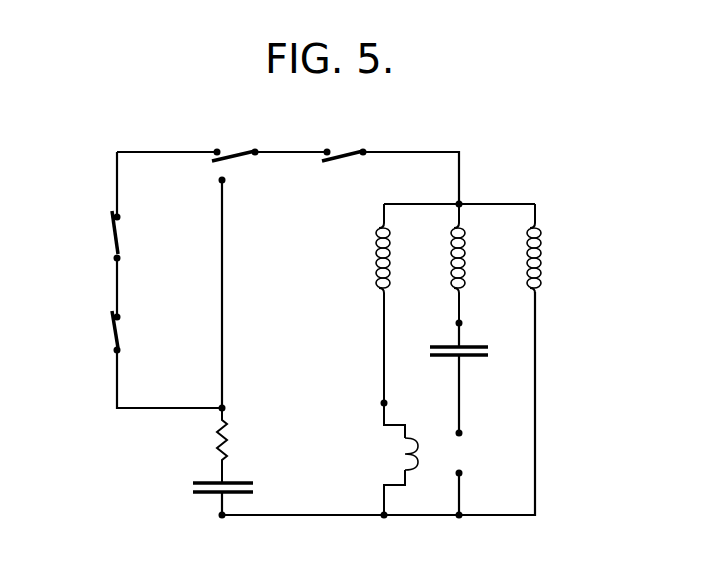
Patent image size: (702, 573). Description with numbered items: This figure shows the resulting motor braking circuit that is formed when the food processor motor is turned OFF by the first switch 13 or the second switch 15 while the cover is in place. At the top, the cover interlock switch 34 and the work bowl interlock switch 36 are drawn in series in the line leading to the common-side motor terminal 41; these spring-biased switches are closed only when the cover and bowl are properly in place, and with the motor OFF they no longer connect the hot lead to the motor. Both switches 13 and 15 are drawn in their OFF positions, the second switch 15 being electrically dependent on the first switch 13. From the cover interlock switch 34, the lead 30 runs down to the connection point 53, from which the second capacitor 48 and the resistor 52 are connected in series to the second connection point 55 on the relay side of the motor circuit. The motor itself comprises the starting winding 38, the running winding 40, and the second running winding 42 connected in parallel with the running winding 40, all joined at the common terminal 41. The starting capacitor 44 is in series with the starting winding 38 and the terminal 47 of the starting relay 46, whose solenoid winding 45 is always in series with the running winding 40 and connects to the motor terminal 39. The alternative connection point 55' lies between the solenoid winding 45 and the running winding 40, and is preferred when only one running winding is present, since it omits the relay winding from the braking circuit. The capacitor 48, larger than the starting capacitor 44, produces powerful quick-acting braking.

The first switch 13 is at (104, 233).
The second switch 15 is at (104, 331).
The lead 30 is at (224, 284).
The cover interlock switch 34 is at (237, 142).
The work bowl interlock switch 36 is at (347, 140).
The starting winding 38 is at (469, 258).
The motor terminal 39 is at (462, 518).
The running winding 40 is at (377, 255).
The motor terminal 41 is at (461, 204).
The second running winding 42 is at (544, 257).
The starting capacitor 44 is at (490, 354).
The solenoid winding 45 is at (405, 453).
The starting relay 46 is at (495, 452).
The relay terminal 47 is at (461, 432).
The second capacitor 48 is at (191, 489).
The resistor 52 is at (218, 437).
The connection point 53 is at (225, 408).
The second connection point 55 is at (203, 531).
The alternative connection point 55' is at (363, 395).